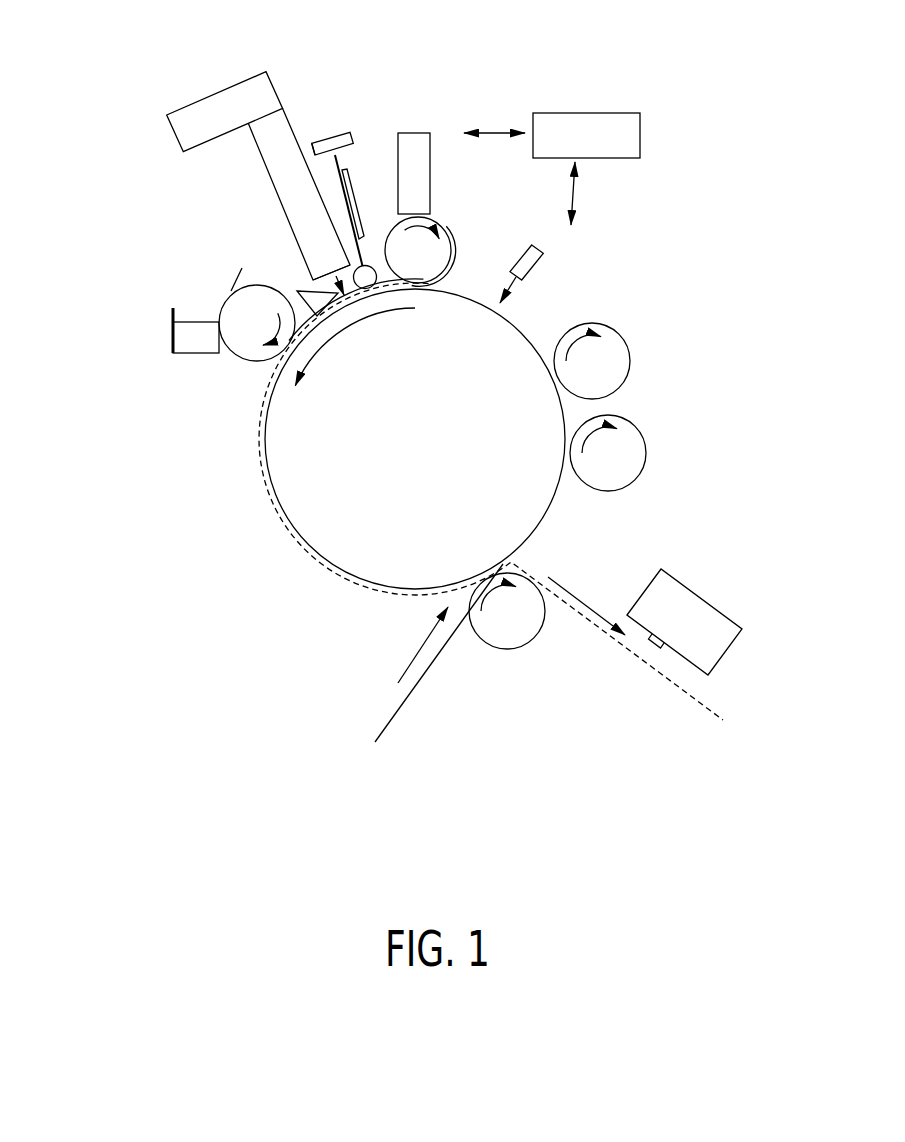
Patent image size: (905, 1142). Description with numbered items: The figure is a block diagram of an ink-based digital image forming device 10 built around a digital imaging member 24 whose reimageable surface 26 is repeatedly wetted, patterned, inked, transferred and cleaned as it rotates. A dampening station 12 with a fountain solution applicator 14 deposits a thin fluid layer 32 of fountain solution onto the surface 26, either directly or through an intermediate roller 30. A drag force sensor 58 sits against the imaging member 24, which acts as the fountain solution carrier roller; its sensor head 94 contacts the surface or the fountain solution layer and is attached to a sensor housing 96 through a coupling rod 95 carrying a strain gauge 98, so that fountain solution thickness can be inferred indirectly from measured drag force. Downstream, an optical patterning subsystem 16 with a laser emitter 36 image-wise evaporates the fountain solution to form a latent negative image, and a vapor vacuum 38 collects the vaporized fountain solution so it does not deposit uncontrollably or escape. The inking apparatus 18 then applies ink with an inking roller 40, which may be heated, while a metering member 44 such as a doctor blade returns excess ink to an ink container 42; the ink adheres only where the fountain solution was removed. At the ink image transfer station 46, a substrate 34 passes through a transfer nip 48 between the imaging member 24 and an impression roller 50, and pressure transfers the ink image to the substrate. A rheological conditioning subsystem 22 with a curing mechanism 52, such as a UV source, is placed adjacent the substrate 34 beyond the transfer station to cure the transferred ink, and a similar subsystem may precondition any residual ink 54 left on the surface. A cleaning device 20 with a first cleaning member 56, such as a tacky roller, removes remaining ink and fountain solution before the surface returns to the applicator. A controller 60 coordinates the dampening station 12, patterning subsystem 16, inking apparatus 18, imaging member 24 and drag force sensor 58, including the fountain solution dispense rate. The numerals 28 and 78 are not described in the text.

The image forming device 10 is at (687, 172).
The dampening station 12 is at (467, 218).
The fountain solution applicator 14 is at (410, 133).
The optical patterning subsystem 16 is at (302, 103).
The inking apparatus 18 is at (149, 293).
The cleaning device 20 is at (676, 412).
The rheological conditioning subsystem 22 is at (700, 595).
The digital imaging member 24 is at (283, 503).
The reimageable surface 26 is at (520, 337).
The roller 28 is at (630, 360).
The intermediate roller 30 is at (401, 215).
The fluid layer 32 is at (376, 268).
The substrate 34 is at (398, 705).
The laser emitter 36 is at (293, 120).
The vapor vacuum 38 is at (297, 291).
The inking roller 40 is at (250, 362).
The ink container 42 is at (172, 335).
The metering member 44 is at (240, 283).
The ink image transfer station 46 is at (418, 607).
The transfer nip 48 is at (515, 567).
The impression roller 50 is at (527, 640).
The curing mechanism 52 is at (665, 650).
The residual ink 54 is at (540, 533).
The first cleaning member 56 is at (647, 454).
The drag force sensor 58 is at (352, 120).
The controller 60 is at (585, 113).
The light source 78 is at (538, 267).
The sensor head 94 is at (350, 266).
The coupling rod 95 is at (336, 158).
The sensor housing 96 is at (313, 147).
The strain gauge 98 is at (351, 178).